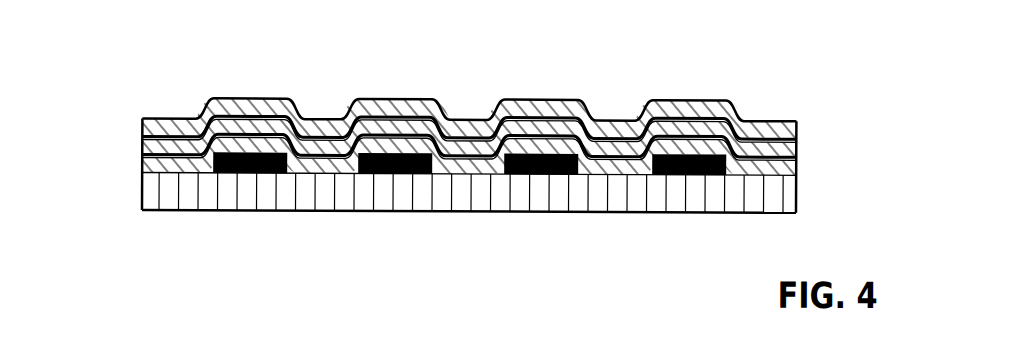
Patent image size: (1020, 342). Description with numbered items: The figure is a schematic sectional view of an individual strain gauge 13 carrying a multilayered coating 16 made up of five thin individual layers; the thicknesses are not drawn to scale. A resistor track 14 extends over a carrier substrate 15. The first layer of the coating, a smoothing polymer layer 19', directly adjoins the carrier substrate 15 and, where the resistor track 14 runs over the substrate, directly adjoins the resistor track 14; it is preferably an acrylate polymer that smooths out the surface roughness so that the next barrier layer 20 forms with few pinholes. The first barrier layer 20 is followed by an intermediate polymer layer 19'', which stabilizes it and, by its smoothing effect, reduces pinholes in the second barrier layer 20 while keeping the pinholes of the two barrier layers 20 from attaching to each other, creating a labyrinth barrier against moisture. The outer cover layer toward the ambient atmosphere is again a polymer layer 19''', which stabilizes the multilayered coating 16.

The strain gauge 13 is at (424, 178).
The resistor track 14 is at (387, 173).
The carrier substrate 15 is at (156, 197).
The multilayered coating 16 is at (423, 136).
The first polymer layer 19' is at (420, 166).
The intermediate polymer layer 19'' is at (410, 132).
The cover polymer layer 19''' is at (449, 95).
The barrier layer 20 is at (141, 127).